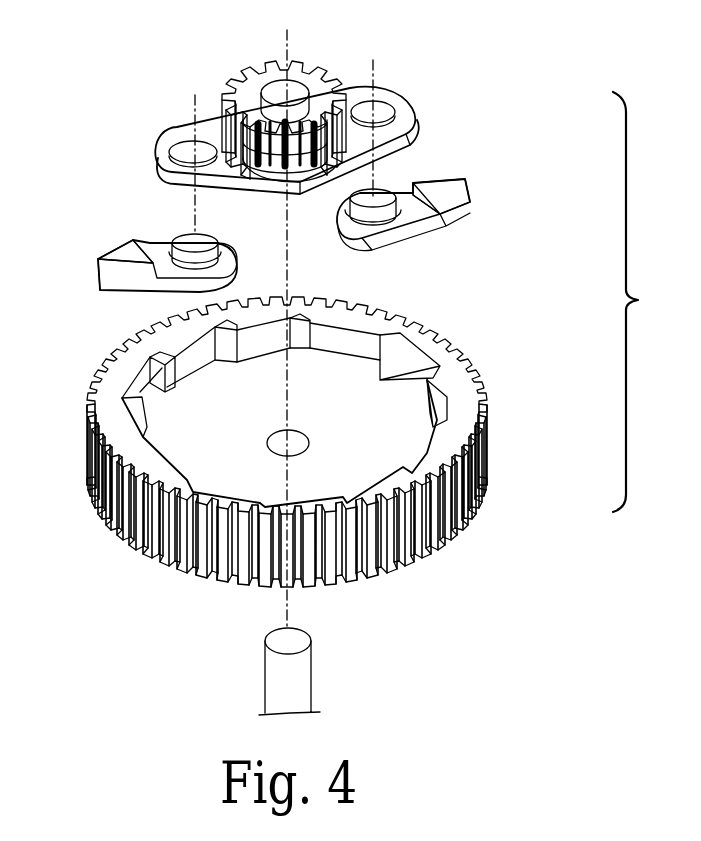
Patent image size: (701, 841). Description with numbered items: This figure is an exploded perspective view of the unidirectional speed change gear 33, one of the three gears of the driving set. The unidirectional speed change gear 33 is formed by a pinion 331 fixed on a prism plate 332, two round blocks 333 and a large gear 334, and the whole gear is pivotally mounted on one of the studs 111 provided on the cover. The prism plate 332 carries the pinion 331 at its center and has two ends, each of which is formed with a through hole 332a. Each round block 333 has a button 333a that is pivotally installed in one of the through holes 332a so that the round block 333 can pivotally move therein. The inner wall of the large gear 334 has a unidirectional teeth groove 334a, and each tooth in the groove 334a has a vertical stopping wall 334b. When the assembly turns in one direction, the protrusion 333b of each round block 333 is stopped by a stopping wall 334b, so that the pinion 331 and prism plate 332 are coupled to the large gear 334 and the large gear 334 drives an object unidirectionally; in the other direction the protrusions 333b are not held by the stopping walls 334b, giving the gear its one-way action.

The unidirectional speed change gear 33 is at (647, 302).
The pinion 331 is at (298, 60).
The prism plate 332 is at (220, 108).
The through hole 332a is at (180, 140).
The round block 333 is at (160, 249).
The button 333a is at (187, 232).
The protrusion 333b is at (117, 257).
The large gear 334 is at (130, 435).
The unidirectional teeth groove 334a is at (408, 370).
The stopping wall 334b is at (308, 300).
The stud 111 is at (312, 670).